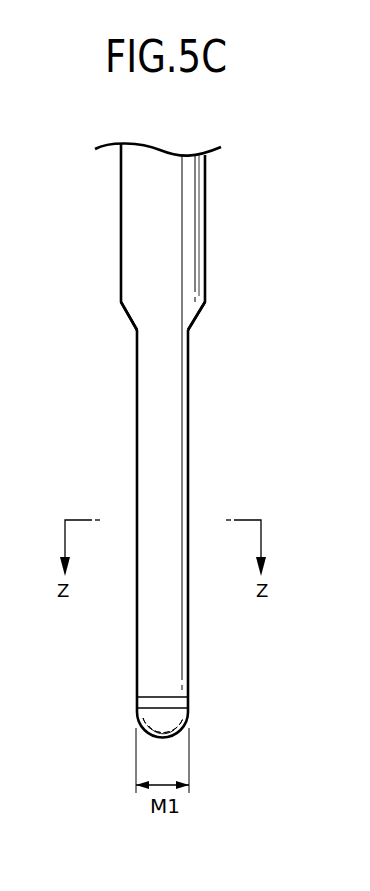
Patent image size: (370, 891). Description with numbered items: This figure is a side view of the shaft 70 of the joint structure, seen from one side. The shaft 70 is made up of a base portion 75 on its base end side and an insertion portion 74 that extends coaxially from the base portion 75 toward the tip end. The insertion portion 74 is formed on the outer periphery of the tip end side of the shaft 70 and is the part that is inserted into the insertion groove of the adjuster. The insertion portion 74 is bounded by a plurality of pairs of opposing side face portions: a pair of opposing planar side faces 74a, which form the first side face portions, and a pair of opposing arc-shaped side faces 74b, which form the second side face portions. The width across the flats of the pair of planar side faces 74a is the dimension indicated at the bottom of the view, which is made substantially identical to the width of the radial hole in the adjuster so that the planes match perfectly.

The shaft 70 is at (215, 286).
The base portion 75 is at (206, 243).
The insertion portion 74 is at (191, 378).
The planar side faces 74a is at (137, 428).
The arc-shaped side faces 74b is at (168, 664).